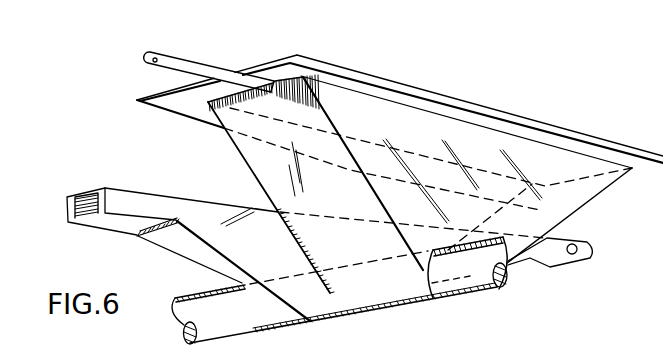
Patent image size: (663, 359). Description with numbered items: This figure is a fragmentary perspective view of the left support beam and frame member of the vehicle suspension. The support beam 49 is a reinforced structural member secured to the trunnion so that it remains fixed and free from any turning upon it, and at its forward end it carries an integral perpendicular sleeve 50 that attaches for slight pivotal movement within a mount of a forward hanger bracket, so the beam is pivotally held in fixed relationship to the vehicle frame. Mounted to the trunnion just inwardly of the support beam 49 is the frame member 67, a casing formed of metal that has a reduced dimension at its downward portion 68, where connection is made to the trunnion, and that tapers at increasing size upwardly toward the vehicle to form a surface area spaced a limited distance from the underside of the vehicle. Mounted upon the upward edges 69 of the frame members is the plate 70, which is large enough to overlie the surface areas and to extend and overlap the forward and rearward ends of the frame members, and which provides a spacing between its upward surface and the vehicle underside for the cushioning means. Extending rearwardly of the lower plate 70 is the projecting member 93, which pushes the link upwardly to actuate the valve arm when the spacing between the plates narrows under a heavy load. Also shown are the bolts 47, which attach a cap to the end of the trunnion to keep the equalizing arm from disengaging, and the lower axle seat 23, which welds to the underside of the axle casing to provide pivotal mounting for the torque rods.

The projecting member 93 is at (167, 52).
The plate 70 is at (506, 112).
The upward edges 69 is at (397, 100).
The frame member 67 is at (260, 173).
The support beam 49 is at (168, 196).
The bolts 47 is at (247, 331).
The lower axle seat 23 is at (343, 321).
The reduced dimension portion 68 is at (418, 288).
The sleeve 50 is at (594, 251).